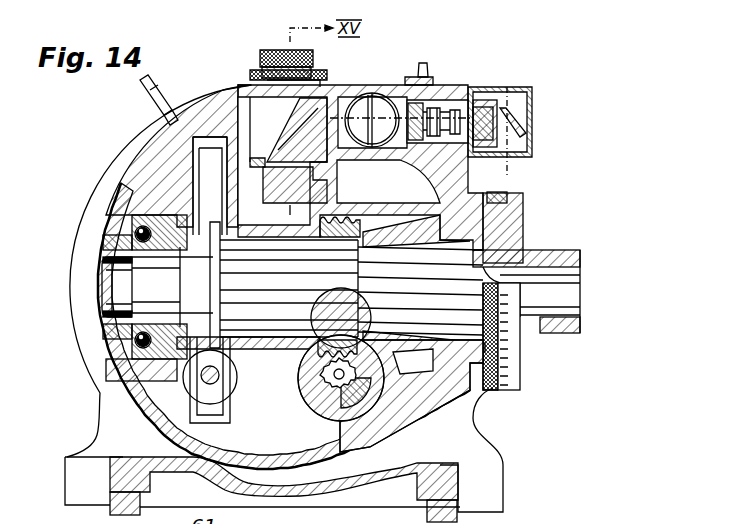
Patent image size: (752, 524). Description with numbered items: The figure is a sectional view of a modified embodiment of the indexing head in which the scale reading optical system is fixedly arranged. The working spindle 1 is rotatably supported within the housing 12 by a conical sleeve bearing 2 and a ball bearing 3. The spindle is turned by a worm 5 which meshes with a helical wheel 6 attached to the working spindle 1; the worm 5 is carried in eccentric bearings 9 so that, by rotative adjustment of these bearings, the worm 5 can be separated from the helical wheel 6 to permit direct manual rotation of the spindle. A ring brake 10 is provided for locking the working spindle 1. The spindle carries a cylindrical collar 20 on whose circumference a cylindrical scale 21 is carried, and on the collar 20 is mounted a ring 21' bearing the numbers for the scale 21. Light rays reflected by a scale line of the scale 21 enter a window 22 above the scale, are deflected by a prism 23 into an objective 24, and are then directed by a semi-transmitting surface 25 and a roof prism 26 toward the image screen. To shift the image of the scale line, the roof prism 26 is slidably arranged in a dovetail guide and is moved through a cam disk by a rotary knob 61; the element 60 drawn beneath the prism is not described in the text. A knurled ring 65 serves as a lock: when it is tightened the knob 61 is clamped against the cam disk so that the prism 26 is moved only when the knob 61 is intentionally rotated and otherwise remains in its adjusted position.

The working spindle 1 is at (533, 254).
The conical sleeve bearing 2 is at (420, 347).
The ball bearing 3 is at (118, 360).
The worm 5 is at (318, 385).
The helical wheel 6 is at (350, 366).
The eccentric bearings 9 is at (330, 418).
The ring brake 10 is at (216, 286).
The housing 12 is at (103, 393).
The cylindrical collar 20 is at (508, 221).
The cylindrical scale 21 is at (509, 349).
The ring 21' is at (495, 350).
The window 22 is at (523, 135).
The prism 23 is at (518, 125).
The objective 24 is at (452, 97).
The semi-transmitting surface 25 is at (362, 95).
The roof prism 26 is at (300, 118).
The prism holder 60 is at (285, 160).
The rotary knob 61 is at (287, 49).
The knurled ring 65 is at (258, 70).